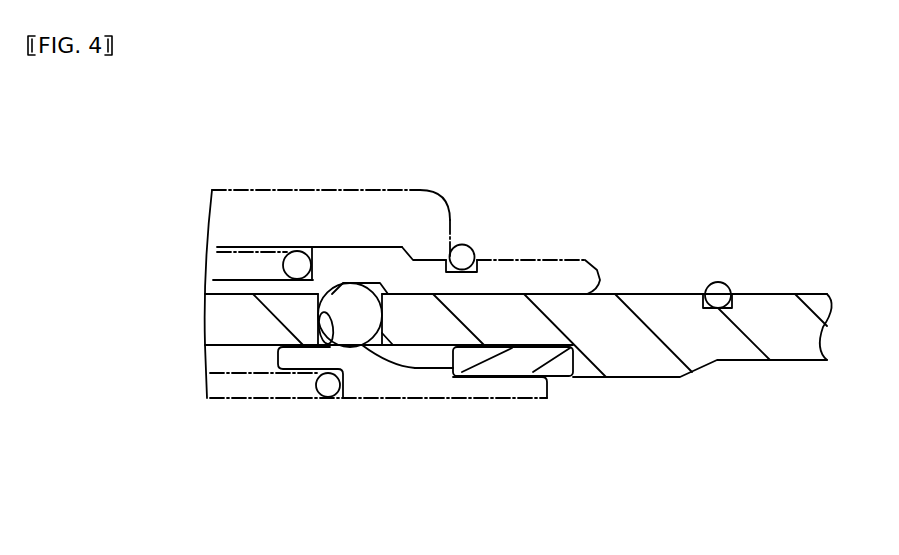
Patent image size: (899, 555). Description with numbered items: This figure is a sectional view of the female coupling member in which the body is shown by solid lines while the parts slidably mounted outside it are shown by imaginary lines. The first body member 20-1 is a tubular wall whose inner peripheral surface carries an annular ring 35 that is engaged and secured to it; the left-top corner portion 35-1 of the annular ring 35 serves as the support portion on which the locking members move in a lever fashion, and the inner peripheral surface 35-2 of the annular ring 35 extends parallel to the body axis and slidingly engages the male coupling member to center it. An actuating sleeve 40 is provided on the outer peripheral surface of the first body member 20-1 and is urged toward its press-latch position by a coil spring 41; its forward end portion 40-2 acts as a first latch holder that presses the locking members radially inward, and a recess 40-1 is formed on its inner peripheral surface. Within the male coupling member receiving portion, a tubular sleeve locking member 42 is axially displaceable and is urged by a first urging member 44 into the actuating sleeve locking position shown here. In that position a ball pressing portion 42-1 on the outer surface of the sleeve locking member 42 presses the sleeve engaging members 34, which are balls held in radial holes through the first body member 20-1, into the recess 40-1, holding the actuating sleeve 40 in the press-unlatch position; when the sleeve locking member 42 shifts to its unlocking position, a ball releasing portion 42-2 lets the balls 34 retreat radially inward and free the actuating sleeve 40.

The actuating sleeve 40 is at (547, 270).
The recess 40-1 is at (367, 293).
The forward end portion of the actuating sleeve 40-2 is at (587, 253).
The coil spring 41 is at (238, 250).
The sleeve engaging members 34 is at (357, 330).
The first body member 20-1 is at (326, 345).
The sleeve locking member 42 is at (428, 385).
The ball pressing portion 42-1 is at (353, 346).
The ball releasing portion 42-2 is at (433, 367).
The first urging member 44 is at (227, 403).
The annular ring 35 is at (535, 358).
The left-top corner portion 35-1 is at (460, 350).
The inner peripheral surface of the annular ring 35-2 is at (512, 377).